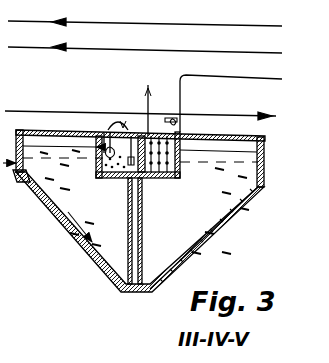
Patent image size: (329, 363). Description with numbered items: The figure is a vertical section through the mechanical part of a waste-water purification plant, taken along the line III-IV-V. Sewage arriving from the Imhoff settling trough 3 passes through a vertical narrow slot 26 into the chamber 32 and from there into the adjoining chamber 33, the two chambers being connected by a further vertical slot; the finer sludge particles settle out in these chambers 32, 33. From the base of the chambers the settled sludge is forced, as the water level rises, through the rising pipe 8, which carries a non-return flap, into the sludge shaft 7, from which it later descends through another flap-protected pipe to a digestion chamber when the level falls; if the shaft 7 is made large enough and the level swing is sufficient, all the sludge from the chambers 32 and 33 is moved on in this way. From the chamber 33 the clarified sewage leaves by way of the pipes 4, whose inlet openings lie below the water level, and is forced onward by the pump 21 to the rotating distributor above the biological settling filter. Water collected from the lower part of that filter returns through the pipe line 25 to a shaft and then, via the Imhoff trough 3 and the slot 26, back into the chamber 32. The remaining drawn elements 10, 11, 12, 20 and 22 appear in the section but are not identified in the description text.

The Imhoff settling trough 3 is at (150, 176).
The pipes 4 is at (179, 166).
The sludge shaft 7 is at (117, 132).
The rising pipe 8 is at (128, 202).
The tube 10 is at (158, 294).
The conduit 11 is at (14, 113).
The gas inlet conduit 12 is at (197, 75).
The gas outlet conduit 20 is at (120, 22).
The pump 21 is at (161, 110).
The liquid level 22 is at (183, 155).
The pipe line 25 is at (145, 42).
The vertical narrow slot 26 is at (18, 180).
The chamber 32 is at (77, 198).
The chamber 33 is at (193, 222).